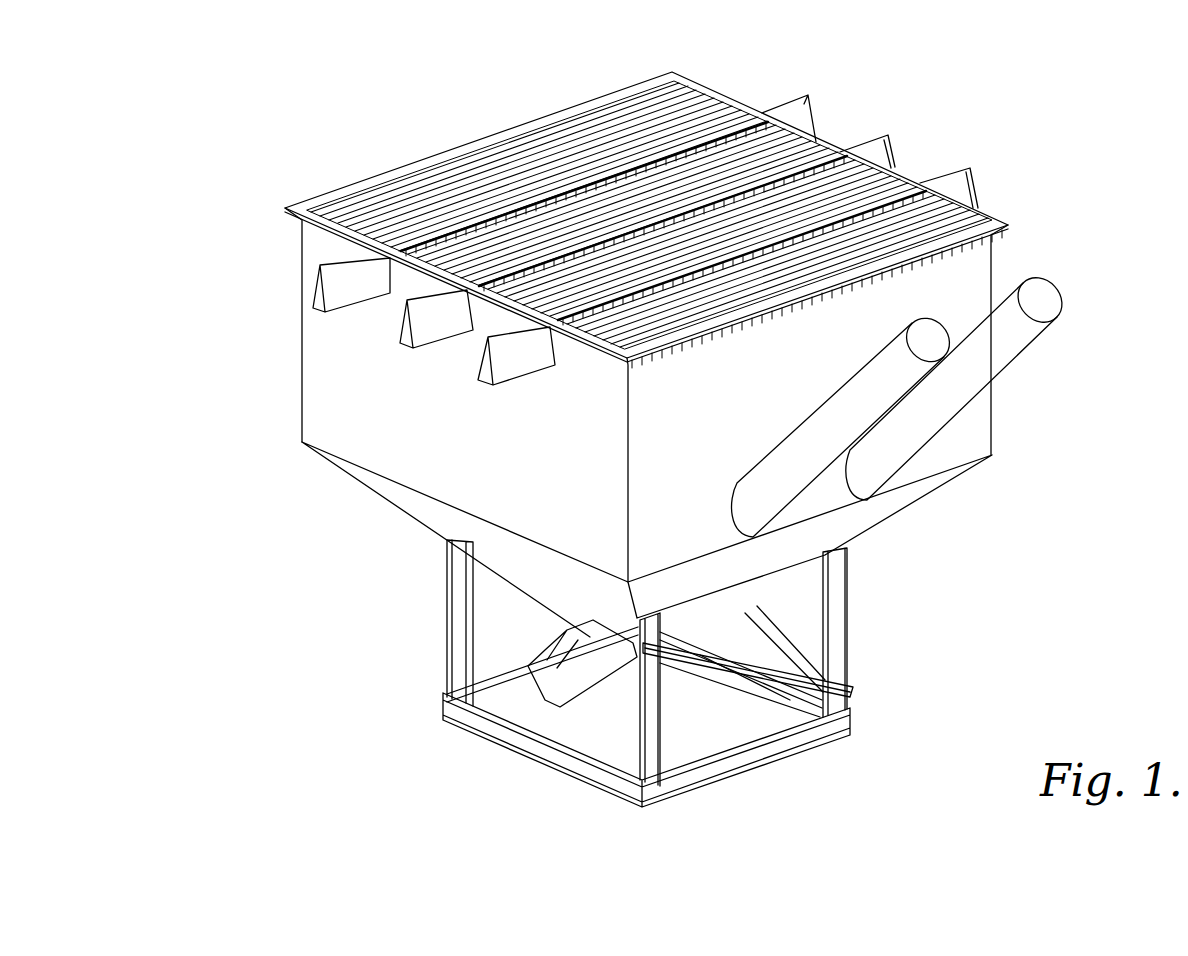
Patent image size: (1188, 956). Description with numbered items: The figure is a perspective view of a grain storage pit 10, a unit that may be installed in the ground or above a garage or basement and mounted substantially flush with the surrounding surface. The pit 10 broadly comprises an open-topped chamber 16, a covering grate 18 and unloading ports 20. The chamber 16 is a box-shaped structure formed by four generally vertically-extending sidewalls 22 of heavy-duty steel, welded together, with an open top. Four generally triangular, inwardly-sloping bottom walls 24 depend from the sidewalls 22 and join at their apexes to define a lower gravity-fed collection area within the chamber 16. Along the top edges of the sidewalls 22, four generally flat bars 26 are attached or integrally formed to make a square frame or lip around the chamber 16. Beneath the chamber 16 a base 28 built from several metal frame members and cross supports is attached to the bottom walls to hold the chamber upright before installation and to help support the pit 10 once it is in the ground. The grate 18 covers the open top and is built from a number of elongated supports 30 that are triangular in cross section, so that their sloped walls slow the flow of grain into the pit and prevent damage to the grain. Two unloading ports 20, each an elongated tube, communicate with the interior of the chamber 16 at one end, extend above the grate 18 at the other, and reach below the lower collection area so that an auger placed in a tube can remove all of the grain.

The grain storage pit 10 is at (1014, 132).
The chamber 16 is at (284, 256).
The covering grate 18 is at (470, 165).
The unloading ports 20 is at (912, 375).
The sidewalls 22 is at (982, 268).
The bottom walls 24 is at (496, 546).
The flat bars 26 is at (703, 87).
The base 28 is at (497, 764).
The elongated supports 30 is at (955, 180).